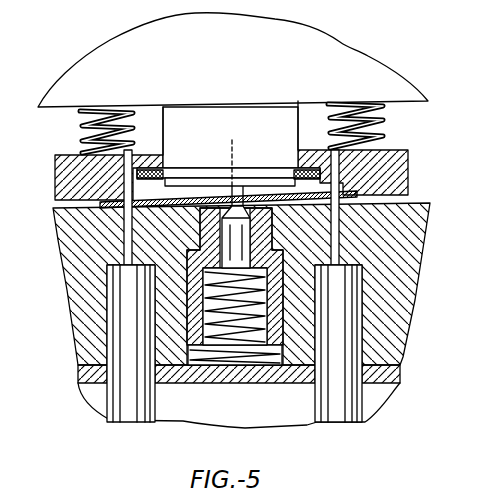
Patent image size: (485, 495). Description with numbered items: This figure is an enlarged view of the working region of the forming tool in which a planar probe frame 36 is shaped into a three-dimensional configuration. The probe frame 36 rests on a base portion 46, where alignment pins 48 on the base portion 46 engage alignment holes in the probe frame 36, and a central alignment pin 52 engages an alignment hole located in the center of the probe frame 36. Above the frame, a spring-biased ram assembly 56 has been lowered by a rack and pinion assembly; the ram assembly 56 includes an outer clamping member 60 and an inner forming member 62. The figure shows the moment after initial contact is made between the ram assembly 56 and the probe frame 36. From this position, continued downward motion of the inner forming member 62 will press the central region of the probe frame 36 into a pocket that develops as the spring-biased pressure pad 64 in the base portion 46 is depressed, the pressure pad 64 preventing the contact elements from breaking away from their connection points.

The probe frame 36 is at (100, 204).
The base portion 46 is at (427, 218).
The alignment pins 48 is at (124, 262).
The central alignment pin 52 is at (243, 150).
The spring-biased ram assembly 56 is at (76, 68).
The outer clamping member 60 is at (55, 168).
The inner forming member 62 is at (300, 146).
The spring-biased pressure pad 64 is at (193, 345).